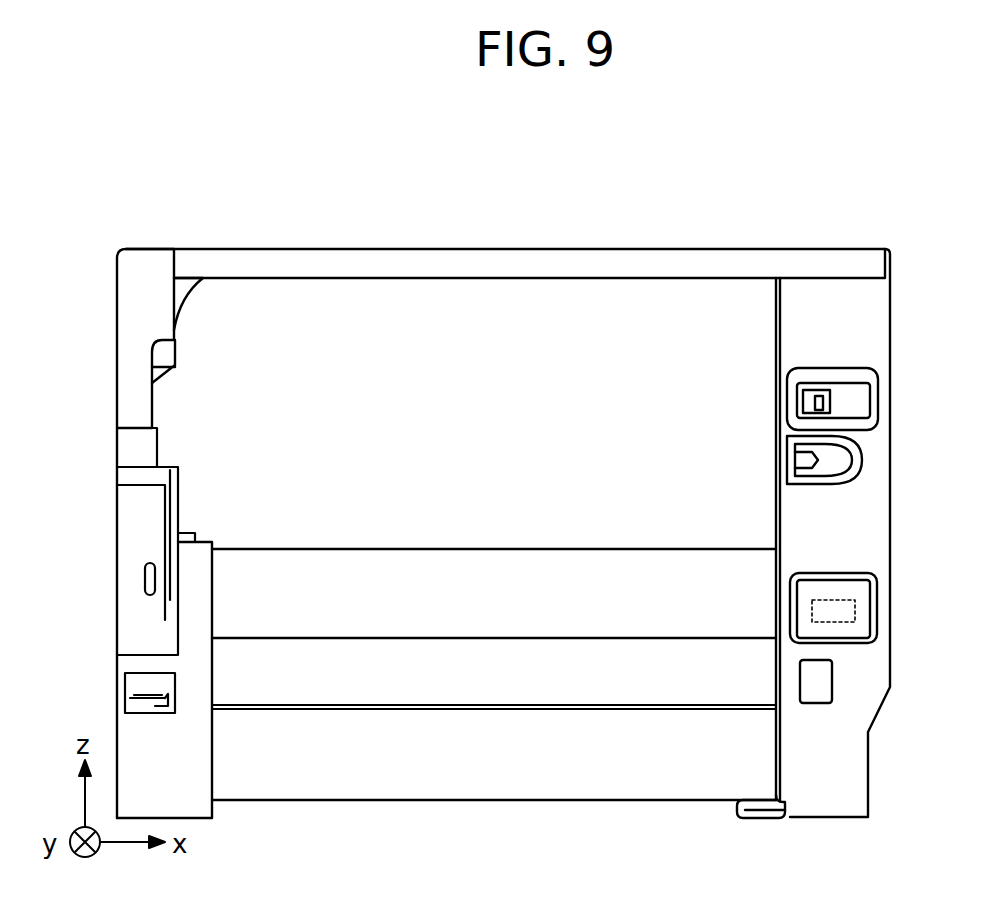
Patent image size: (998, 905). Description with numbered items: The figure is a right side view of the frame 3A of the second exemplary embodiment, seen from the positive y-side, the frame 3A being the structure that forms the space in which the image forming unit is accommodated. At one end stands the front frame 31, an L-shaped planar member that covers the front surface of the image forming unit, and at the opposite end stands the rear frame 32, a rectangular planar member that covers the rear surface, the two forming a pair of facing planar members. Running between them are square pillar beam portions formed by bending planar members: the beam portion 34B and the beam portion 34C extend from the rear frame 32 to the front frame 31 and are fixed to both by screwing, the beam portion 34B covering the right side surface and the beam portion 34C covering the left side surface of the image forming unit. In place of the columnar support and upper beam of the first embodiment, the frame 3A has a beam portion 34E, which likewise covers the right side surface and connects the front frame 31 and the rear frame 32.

The frame 3A is at (185, 230).
The front frame 31 is at (133, 590).
The rear frame 32 is at (878, 333).
The beam portion 34B is at (328, 772).
The beam portion 34C is at (708, 257).
The beam portion 34E is at (504, 620).